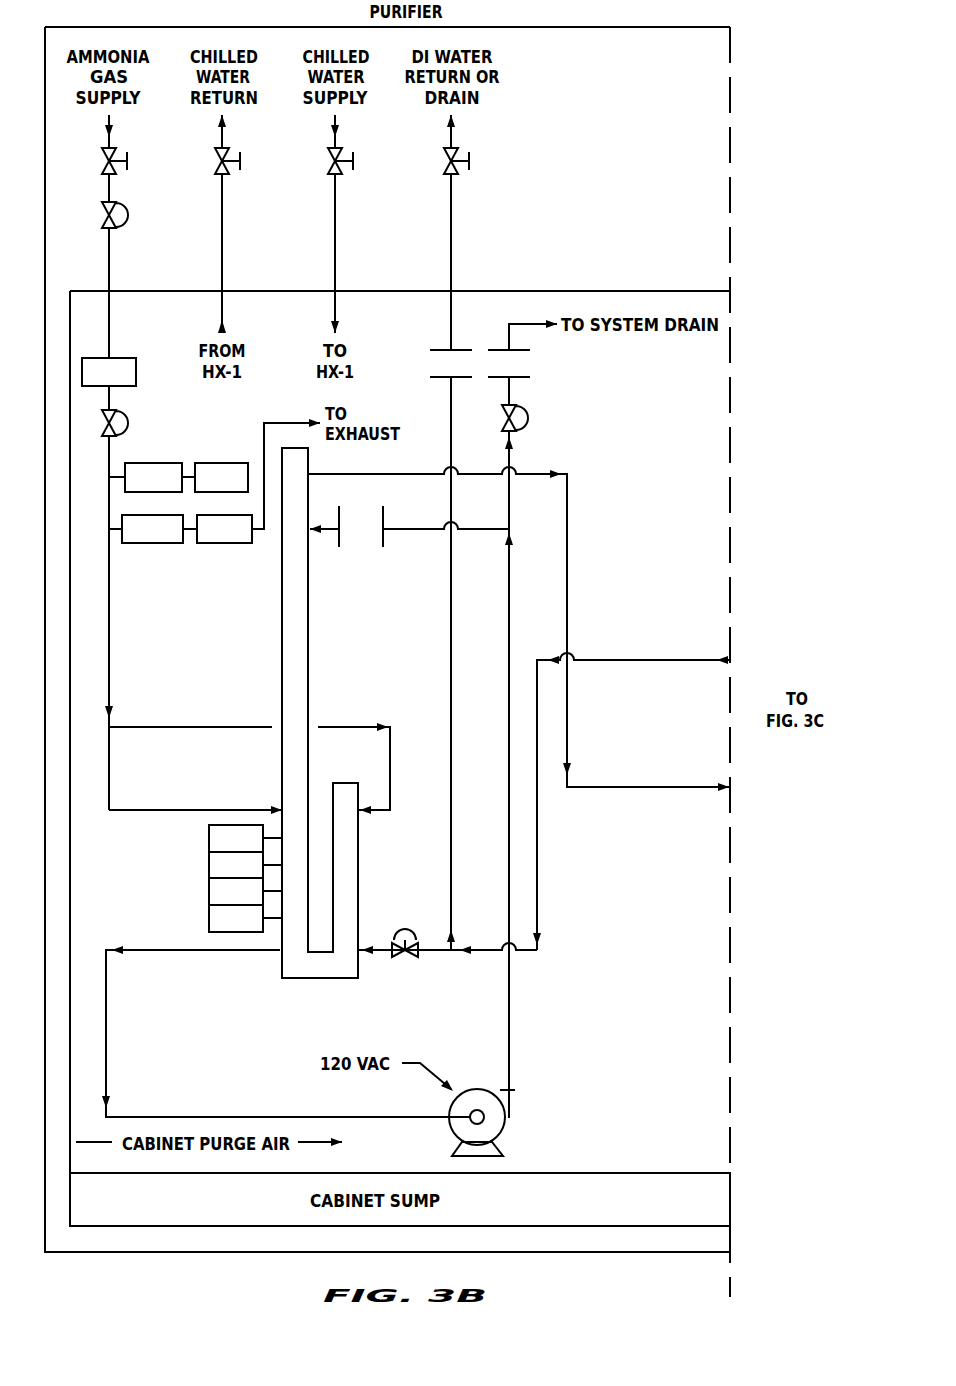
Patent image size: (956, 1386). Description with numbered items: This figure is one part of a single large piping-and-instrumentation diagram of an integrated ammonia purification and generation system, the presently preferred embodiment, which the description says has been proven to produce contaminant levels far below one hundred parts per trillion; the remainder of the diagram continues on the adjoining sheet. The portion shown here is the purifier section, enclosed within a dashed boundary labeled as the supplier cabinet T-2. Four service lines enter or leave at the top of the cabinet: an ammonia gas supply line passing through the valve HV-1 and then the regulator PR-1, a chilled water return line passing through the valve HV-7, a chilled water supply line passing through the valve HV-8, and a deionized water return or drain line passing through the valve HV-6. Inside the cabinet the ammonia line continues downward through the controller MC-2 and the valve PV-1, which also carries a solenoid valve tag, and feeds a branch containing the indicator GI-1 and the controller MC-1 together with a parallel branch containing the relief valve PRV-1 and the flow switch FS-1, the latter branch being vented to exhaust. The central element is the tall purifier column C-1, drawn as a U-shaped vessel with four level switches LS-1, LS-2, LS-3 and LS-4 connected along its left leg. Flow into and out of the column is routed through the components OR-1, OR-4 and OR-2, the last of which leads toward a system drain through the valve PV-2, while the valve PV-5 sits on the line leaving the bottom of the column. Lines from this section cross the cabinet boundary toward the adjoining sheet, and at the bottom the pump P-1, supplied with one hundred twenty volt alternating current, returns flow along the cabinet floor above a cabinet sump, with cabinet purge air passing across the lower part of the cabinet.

The supplier cabinet T-2 is at (490, 287).
The hand valve, ammonia gas supply HV-1 is at (136, 161).
The hand valve, chilled water return HV-7 is at (250, 161).
The hand valve, chilled water supply HV-8 is at (363, 161).
The hand valve, DI water return or drain HV-6 is at (480, 161).
The pressure regulator PR-1 is at (137, 215).
The mass controller MC-2 is at (109, 372).
The pneumatic valve and solenoid valve PV-1 is at (172, 423).
The gauge indicator GI-1 is at (153, 477).
The mass controller MC-1 is at (221, 477).
The pressure relief valve PRV-1 is at (152, 529).
The flow switch FS-1 is at (224, 529).
The purifier column C-1 is at (320, 713).
The level switch LS-1 is at (245, 838).
The level switch LS-2 is at (245, 865).
The level switch LS-3 is at (245, 891).
The level switch LS-4 is at (245, 918).
The orifice restrictor OR-1 is at (409, 526).
The orifice restrictor OR-4 is at (451, 363).
The orifice restrictor OR-2 is at (509, 363).
The pneumatic valve PV-2 is at (537, 418).
The pneumatic valve PV-5 is at (405, 931).
The pump P-1 is at (497, 1122).